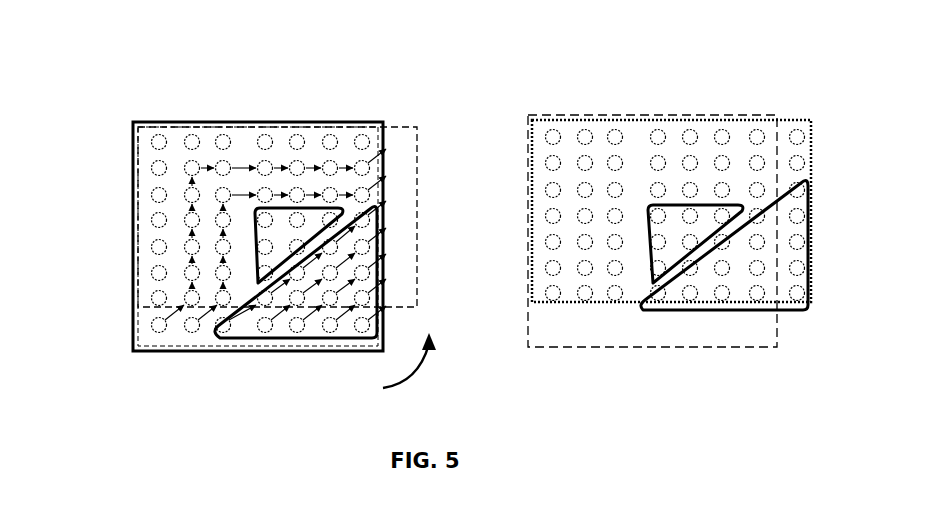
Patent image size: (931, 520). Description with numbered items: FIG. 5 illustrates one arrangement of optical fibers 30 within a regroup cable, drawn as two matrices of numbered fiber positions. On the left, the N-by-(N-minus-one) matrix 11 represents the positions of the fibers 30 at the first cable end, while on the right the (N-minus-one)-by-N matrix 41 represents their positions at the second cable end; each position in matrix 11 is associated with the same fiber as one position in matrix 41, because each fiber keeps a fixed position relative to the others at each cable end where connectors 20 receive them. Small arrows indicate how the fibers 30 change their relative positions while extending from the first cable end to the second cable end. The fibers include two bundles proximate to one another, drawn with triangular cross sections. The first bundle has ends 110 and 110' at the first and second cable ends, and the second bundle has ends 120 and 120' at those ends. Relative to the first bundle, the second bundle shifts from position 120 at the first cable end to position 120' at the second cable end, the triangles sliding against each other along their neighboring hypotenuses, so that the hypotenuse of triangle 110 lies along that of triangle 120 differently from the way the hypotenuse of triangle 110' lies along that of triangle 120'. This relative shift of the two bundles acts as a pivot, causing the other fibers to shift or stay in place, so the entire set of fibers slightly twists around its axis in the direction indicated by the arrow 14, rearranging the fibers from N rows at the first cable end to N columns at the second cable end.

The N×(N−1) matrix 11 is at (133, 340).
The arrow 14 is at (417, 373).
The connector 20 is at (548, 137).
The optical fiber 30 is at (155, 142).
The (N−1)×N matrix 41 is at (417, 190).
The first bundle end 110 is at (288, 181).
The second bundle end 120 is at (296, 300).
The first bundle end at second cable end 110' is at (681, 178).
The second bundle end at second cable end 120' is at (742, 281).